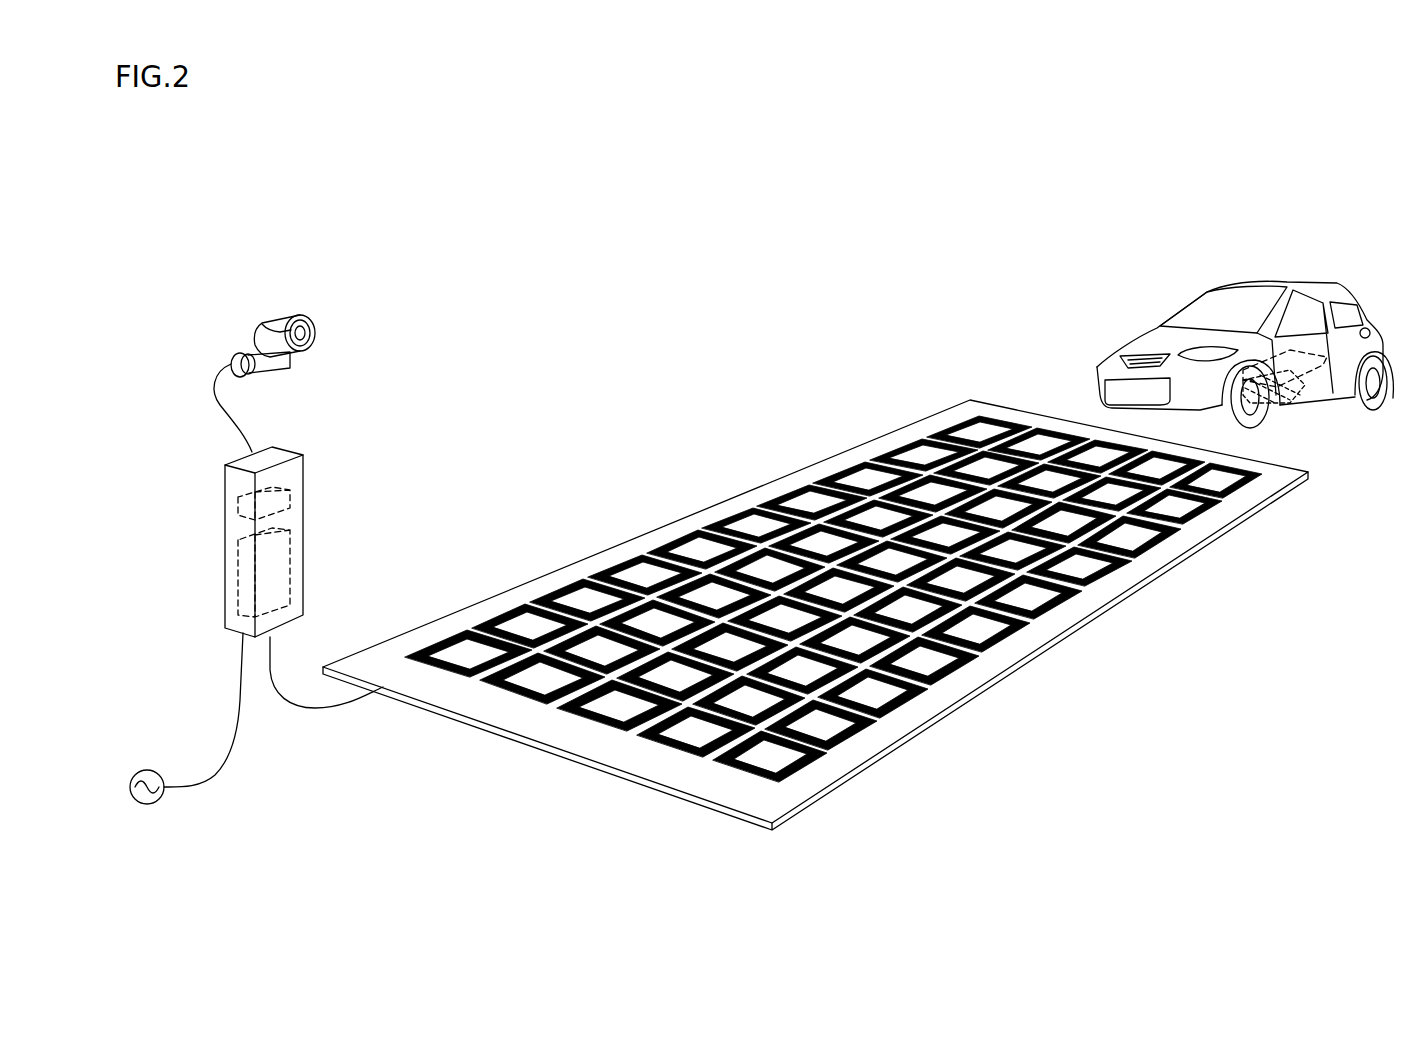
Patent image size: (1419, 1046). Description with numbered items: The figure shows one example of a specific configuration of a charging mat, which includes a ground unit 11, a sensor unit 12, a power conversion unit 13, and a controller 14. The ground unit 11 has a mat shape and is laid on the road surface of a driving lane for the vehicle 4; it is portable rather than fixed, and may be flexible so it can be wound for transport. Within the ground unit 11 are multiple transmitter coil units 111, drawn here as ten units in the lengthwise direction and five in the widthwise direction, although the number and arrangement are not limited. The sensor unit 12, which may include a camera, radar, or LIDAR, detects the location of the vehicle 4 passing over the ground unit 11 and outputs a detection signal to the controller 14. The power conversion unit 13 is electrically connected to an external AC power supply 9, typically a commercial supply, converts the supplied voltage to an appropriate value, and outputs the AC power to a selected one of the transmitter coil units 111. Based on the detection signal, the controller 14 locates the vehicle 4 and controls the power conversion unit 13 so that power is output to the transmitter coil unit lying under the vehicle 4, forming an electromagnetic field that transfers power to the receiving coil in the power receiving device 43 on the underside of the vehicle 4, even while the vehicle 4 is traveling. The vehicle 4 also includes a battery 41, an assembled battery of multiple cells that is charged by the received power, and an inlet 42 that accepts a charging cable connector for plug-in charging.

The vehicle 4 is at (1303, 283).
The AC power supply 9 is at (143, 770).
The ground unit 11 is at (892, 753).
The transmitter coil unit 111 is at (1008, 640).
The sensor unit 12 is at (278, 313).
The power conversion unit 13 is at (282, 574).
The controller 14 is at (283, 504).
The battery 41 is at (1317, 372).
The inlet 42 is at (1372, 332).
The power receiving device 43 is at (1290, 398).